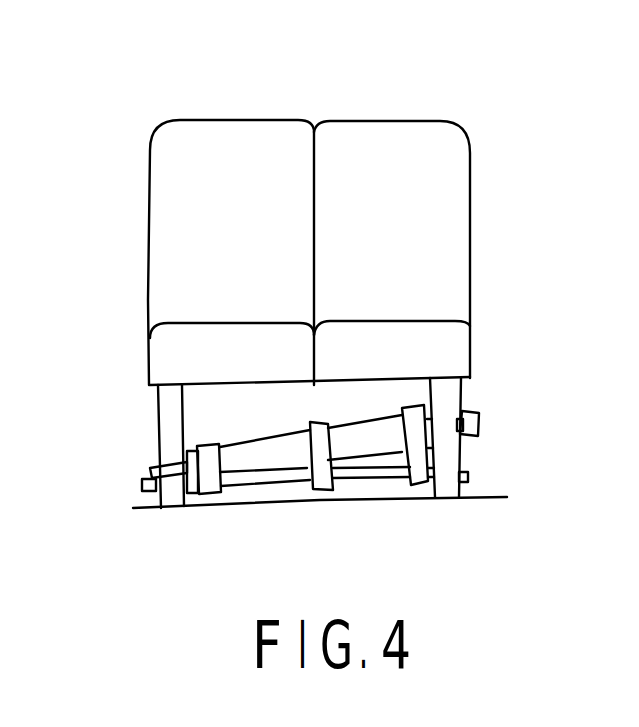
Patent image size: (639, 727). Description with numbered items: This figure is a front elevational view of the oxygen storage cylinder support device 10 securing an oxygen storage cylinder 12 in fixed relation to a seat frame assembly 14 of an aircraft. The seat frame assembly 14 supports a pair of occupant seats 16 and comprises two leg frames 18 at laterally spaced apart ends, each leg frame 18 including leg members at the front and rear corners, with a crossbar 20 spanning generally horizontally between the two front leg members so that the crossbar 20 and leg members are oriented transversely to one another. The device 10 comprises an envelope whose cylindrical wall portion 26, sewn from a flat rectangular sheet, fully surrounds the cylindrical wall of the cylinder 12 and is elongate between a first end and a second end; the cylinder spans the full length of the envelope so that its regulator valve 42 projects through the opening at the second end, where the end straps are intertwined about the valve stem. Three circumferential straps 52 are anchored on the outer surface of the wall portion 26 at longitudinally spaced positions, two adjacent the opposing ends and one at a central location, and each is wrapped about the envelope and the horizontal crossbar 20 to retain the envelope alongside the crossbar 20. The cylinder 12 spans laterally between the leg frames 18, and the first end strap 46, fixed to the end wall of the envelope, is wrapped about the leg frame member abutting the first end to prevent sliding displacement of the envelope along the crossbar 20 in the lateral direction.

The oxygen storage cylinder support device 10 is at (236, 428).
The oxygen storage cylinder 12 is at (386, 483).
The seat frame assembly 14 is at (520, 319).
The occupant seats 16 is at (236, 170).
The leg frames 18 is at (162, 552).
The crossbar 20 is at (369, 473).
The cylindrical wall portion 26 is at (367, 437).
The regulator valve 42 is at (480, 422).
The first end strap 46 is at (150, 472).
The circumferential straps 52 is at (208, 488).